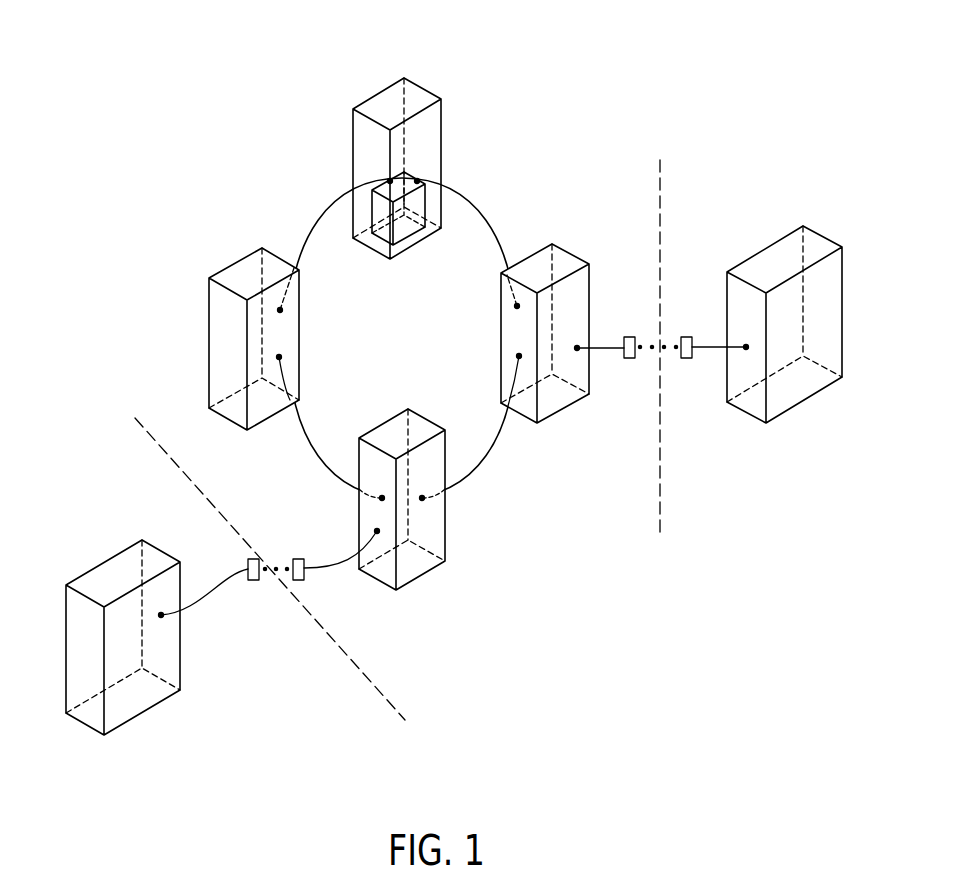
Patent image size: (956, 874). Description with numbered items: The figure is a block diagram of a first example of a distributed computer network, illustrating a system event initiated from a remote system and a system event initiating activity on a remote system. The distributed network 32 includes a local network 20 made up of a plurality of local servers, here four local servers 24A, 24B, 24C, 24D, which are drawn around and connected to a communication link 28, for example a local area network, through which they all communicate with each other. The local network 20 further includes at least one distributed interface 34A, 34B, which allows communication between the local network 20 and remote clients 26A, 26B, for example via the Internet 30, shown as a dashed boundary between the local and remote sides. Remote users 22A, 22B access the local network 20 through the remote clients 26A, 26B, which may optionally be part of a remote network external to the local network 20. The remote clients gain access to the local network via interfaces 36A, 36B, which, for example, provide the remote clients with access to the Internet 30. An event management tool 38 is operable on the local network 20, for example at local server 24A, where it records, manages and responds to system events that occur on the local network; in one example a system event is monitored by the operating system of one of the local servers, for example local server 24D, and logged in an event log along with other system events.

The local network 20 is at (515, 85).
The remote user 22A is at (759, 190).
The remote user 22B is at (157, 718).
The local server 24A is at (420, 87).
The local server 24B is at (563, 413).
The local server 24C is at (445, 542).
The local server 24D is at (238, 273).
The remote client 26A is at (792, 408).
The remote client 26B is at (112, 568).
The communication link 28 is at (317, 215).
The Internet 30 is at (682, 390).
The distributed network 32 is at (587, 528).
The distributed interface 34A is at (627, 337).
The distributed interface 34B is at (298, 559).
The interface 36A is at (686, 337).
The interface 36B is at (253, 582).
The event management tool 38 is at (413, 232).